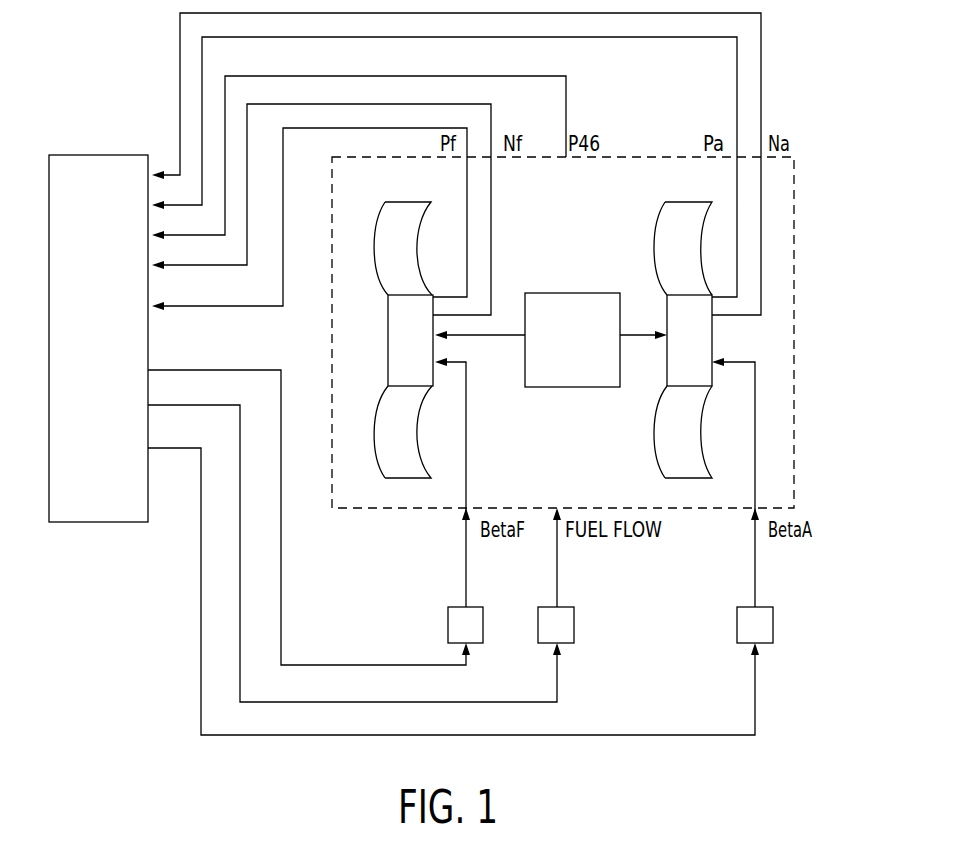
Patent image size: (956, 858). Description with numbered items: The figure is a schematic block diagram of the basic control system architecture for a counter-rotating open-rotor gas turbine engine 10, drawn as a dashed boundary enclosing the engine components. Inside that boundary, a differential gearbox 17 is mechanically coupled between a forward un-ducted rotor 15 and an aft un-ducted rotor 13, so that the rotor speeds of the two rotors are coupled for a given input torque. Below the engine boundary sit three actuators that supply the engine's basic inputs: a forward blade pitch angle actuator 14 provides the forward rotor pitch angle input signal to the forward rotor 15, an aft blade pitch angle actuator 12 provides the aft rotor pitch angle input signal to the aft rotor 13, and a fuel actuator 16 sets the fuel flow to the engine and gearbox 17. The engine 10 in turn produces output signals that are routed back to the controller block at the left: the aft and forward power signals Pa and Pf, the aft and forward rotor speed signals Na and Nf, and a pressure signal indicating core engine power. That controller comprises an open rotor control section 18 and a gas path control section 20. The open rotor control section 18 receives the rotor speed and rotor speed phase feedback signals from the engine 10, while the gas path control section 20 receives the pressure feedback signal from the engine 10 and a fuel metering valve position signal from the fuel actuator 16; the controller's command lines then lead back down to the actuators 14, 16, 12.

The CROR gas turbine engine 10 is at (802, 171).
The aft blade pitch angle actuator 12 is at (760, 607).
The aft un-ducted rotor 13 is at (667, 303).
The forward blade pitch angle actuator 14 is at (460, 607).
The forward un-ducted rotor 15 is at (388, 325).
The fuel actuator 16 is at (567, 607).
The differential gearbox 17 is at (547, 293).
The open rotor control section 18 is at (98, 338).
The gas path control section 20 is at (98, 338).